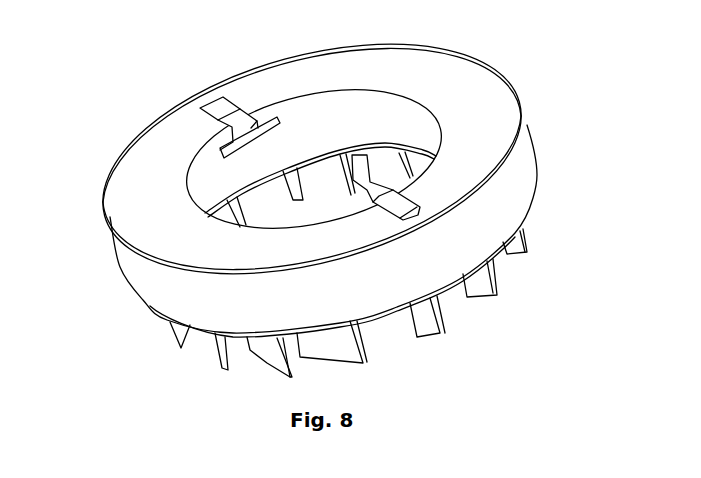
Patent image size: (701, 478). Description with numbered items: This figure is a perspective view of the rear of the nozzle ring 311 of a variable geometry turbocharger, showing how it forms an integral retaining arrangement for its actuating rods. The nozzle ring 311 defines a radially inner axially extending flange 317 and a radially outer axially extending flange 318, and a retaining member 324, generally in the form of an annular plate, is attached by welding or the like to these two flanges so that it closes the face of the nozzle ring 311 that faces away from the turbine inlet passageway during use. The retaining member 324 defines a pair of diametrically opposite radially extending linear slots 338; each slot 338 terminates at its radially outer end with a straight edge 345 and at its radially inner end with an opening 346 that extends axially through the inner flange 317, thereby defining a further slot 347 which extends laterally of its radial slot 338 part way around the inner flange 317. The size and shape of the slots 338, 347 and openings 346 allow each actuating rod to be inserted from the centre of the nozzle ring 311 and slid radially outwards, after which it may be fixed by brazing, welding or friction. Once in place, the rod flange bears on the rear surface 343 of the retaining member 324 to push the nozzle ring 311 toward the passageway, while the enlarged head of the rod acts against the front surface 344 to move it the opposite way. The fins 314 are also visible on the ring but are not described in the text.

The nozzle ring 311 is at (527, 130).
The radial fins 314 is at (497, 297).
The radially inner axially extending flange 317 is at (381, 113).
The radially outer axially extending flange 318 is at (160, 294).
The retaining member 324 is at (480, 88).
The radially extending linear slot 338 is at (217, 122).
The rear surface 343 is at (153, 233).
The front surface 344 is at (238, 103).
The straight edge 345 is at (420, 212).
The opening 346 is at (250, 120).
The further slot 347 is at (220, 155).